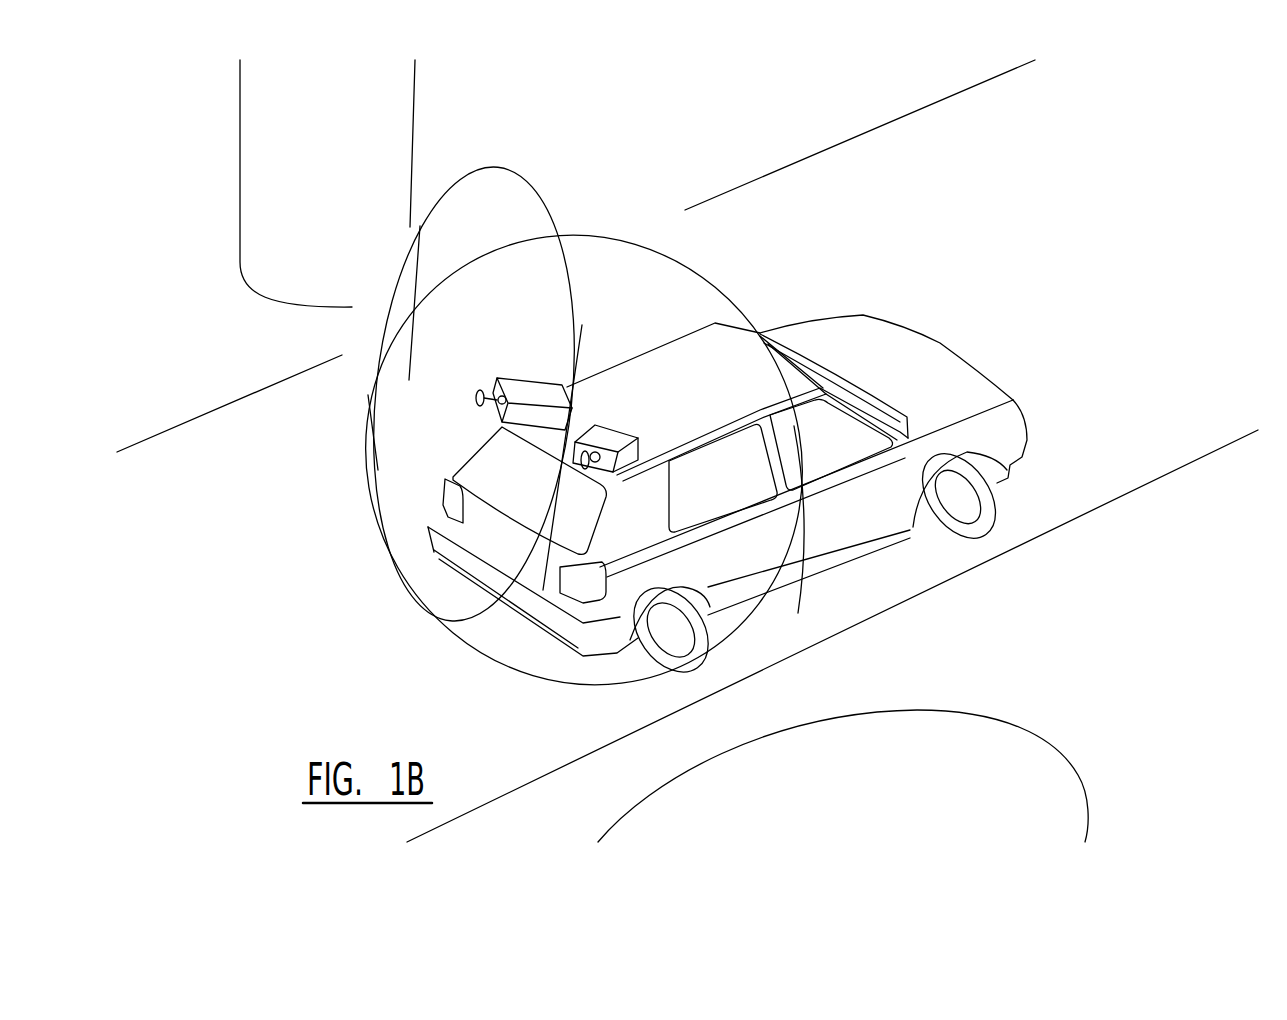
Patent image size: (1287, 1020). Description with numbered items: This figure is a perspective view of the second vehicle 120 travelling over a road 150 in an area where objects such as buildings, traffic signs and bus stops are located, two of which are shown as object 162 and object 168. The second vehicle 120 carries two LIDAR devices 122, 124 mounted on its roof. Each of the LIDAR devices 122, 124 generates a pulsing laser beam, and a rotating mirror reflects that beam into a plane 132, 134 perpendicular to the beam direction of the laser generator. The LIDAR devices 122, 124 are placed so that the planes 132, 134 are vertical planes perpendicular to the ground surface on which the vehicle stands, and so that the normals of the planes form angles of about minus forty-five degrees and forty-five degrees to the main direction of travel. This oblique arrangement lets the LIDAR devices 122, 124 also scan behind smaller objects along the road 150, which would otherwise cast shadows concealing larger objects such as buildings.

The second vehicle 120 is at (976, 380).
The LIDAR device 122 is at (522, 382).
The LIDAR device 124 is at (608, 433).
The plane 132 is at (524, 176).
The plane 134 is at (748, 632).
The road 150 is at (863, 152).
The object 162 is at (263, 182).
The object 168 is at (663, 803).